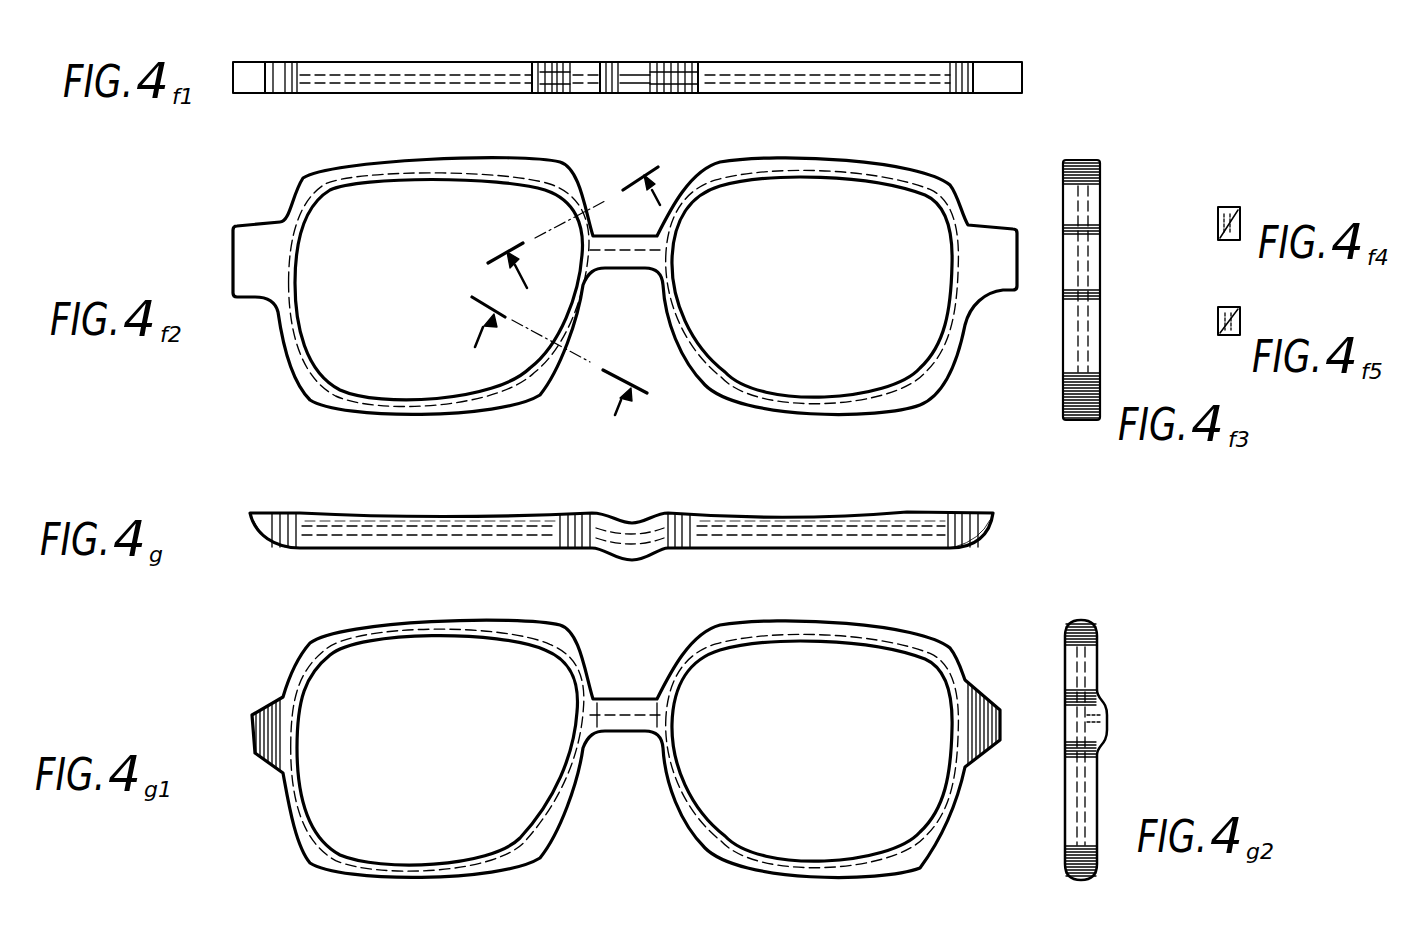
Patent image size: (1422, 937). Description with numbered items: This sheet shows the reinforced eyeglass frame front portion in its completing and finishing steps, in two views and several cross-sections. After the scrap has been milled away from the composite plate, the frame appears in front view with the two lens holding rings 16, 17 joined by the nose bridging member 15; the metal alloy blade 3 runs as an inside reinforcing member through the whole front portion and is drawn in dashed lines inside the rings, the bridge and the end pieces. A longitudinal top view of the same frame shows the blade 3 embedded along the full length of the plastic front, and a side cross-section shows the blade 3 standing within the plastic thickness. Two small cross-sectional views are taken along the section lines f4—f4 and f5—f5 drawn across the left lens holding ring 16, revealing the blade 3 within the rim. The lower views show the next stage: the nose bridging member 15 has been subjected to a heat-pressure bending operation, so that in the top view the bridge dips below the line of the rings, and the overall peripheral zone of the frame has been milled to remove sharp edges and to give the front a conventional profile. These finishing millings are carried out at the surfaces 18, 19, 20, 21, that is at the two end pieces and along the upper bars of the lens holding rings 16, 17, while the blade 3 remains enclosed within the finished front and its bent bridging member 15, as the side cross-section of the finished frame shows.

In FIG. 4F1, the blade 3 is at (757, 85).
In FIG. 4F2, the blade 3 is at (305, 355).
In FIG. 4F3, the blade 3 is at (1088, 200).
In FIG. 4G, the blade 3 is at (710, 540).
In FIG. 4G1, the blade 3 is at (325, 848).
In FIG. 4G2, the blade 3 is at (1087, 660).
In FIG. 4F1, the nose bridging member 15 is at (637, 72).
In FIG. 4F2, the nose bridging member 15 is at (627, 258).
In FIG. 4G, the nose bridging member 15 is at (628, 528).
In FIG. 4G1, the nose bridging member 15 is at (612, 725).
In FIG. 4G2, the nose bridging member 15 is at (1095, 725).
In FIG. 4F2, the lens holding ring 16 is at (408, 160).
In FIG. 4G1, the lens holding ring 16 is at (381, 632).
In FIG. 4F2, the lens holding ring 17 is at (893, 172).
In FIG. 4G1, the lens holding ring 17 is at (915, 640).
In FIG. 4G, the finishing milling surface 18 is at (258, 540).
In FIG. 4G, the finishing milling surface 19 is at (985, 537).
In FIG. 4G, the finishing milling surface 20 is at (448, 520).
In FIG. 4G, the finishing milling surface 21 is at (808, 518).
In FIG. 4F2, the section line f4- f4 is at (583, 232).
In FIG. 4F2, the section line f5- f5 is at (556, 370).